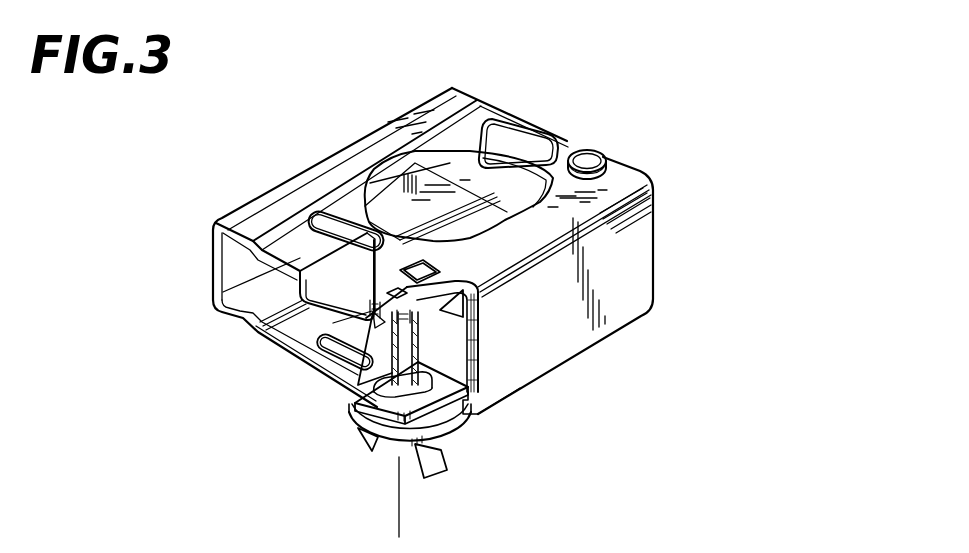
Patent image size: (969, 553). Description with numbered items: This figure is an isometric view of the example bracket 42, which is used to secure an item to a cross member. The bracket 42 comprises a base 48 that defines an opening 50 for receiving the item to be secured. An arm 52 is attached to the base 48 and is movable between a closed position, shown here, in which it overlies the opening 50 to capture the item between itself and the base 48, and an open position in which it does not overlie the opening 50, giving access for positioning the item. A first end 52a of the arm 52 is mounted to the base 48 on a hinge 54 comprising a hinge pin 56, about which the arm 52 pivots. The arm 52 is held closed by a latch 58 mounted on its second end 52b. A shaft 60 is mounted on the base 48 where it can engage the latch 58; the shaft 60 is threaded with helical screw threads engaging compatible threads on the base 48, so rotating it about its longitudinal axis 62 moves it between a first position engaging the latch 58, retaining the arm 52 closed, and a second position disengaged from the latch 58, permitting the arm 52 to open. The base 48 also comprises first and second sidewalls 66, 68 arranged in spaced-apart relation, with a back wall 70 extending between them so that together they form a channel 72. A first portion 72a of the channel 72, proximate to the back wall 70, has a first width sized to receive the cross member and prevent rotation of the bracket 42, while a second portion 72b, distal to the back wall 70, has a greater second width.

The bracket 42 is at (785, 190).
The base 48 is at (293, 340).
The opening 50 is at (505, 190).
The arm 52 is at (634, 303).
The first end of arm 52a is at (718, 191).
The second end of arm 52b is at (490, 417).
The hinge 54 is at (619, 178).
The hinge pin 56 is at (587, 158).
The latch 58 is at (445, 345).
The shaft 60 is at (352, 396).
The longitudinal axis 62 is at (399, 498).
The first sidewall 66 is at (300, 230).
The second sidewall 68 is at (307, 360).
The back wall 70 is at (214, 250).
The channel 72 is at (263, 290).
The first portion of channel 72a is at (213, 243).
The second portion of channel 72b is at (282, 348).